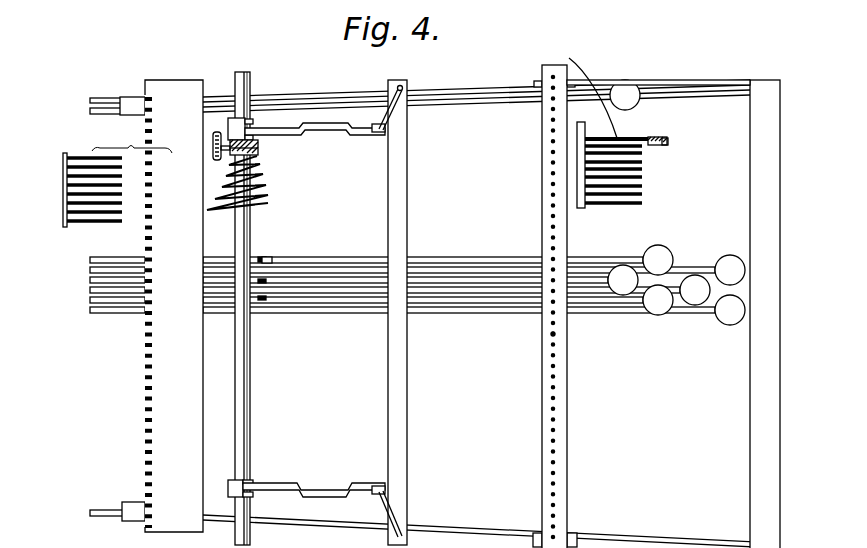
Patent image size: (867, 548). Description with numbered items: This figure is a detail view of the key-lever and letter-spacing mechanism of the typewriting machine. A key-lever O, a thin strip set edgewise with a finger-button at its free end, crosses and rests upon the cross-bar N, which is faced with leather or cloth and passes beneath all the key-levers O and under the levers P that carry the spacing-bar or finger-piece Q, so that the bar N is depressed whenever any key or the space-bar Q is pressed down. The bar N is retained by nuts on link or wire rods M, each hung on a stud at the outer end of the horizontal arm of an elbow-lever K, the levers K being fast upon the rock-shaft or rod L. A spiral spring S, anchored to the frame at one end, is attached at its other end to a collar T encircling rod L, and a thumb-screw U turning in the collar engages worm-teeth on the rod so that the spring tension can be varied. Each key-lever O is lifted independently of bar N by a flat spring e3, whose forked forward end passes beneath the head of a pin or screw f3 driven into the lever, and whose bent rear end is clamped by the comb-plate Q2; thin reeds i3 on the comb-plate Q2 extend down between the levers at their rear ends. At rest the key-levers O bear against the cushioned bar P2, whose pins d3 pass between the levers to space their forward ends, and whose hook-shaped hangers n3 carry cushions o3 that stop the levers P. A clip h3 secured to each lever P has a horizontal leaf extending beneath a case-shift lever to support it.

The clip h3 is at (125, 503).
The comb-plate Q2 is at (147, 291).
The rock-shaft L is at (242, 88).
The elbow-lever K is at (279, 127).
The space-bar lever P is at (489, 304).
The link or wire rod M is at (398, 107).
The cross-bar N is at (390, 430).
The collar T is at (260, 152).
The thumb-screw U is at (212, 158).
The spring S is at (268, 193).
The pins or reeds i3 is at (92, 202).
The flat spring e3 is at (256, 256).
The pin or screw f3 is at (268, 253).
The key-lever O is at (417, 280).
The bar P2 is at (562, 446).
The hook-shaped hanger n3 is at (653, 137).
The cushion o3 is at (668, 141).
The wires or pins d3 is at (557, 334).
The spacing-bar or finger-piece Q is at (673, 314).